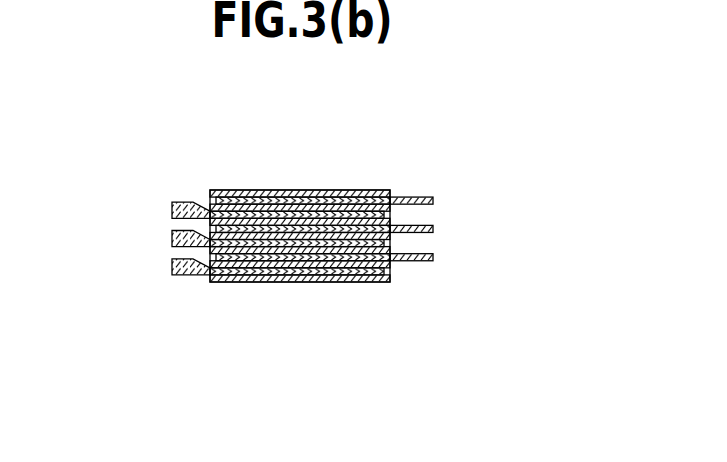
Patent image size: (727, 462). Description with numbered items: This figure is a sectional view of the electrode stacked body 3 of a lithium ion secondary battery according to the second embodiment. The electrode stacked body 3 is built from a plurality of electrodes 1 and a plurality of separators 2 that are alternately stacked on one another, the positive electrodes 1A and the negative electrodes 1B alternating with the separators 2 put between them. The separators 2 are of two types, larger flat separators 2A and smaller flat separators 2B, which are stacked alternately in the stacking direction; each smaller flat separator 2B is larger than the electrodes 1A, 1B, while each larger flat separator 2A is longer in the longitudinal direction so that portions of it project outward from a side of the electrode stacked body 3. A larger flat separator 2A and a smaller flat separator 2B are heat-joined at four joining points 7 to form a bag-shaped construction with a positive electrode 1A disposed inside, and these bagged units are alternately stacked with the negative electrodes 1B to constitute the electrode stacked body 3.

The electrodes 1 is at (480, 112).
The positive electrode 1A is at (248, 208).
The negative electrode 1B is at (217, 194).
The separators 2 is at (165, 385).
The larger flat separator 2A is at (217, 201).
The smaller flat separator 2B is at (255, 215).
The electrode stacked body 3 is at (449, 185).
The joining points 7 is at (188, 259).